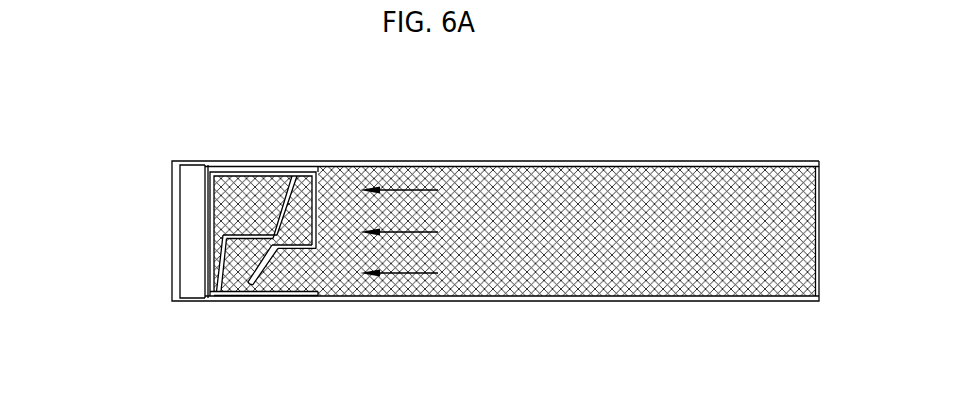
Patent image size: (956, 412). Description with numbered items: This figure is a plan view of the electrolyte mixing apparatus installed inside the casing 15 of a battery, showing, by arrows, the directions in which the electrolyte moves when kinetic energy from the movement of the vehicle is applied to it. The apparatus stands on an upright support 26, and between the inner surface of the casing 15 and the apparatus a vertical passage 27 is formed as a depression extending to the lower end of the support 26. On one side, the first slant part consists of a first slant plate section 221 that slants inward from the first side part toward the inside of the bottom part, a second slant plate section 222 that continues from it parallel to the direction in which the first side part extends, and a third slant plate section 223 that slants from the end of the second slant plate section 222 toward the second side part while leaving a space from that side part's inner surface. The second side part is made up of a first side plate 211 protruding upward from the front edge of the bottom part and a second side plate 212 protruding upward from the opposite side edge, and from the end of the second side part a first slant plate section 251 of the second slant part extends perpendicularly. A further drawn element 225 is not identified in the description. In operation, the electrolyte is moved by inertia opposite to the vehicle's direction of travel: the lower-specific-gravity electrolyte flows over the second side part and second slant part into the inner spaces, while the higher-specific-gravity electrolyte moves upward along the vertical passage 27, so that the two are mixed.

The casing 15 is at (193, 220).
The support 26 is at (203, 255).
The vertical passage 27 is at (172, 248).
The first side plate 211 is at (317, 203).
The second side plate 212 is at (247, 160).
The first slant plate section 221 is at (223, 258).
The second slant plate section 222 is at (247, 223).
The third slant plate section 223 is at (279, 206).
The inclined portion of second guide 225 is at (265, 268).
The first slant plate section 251 is at (299, 252).